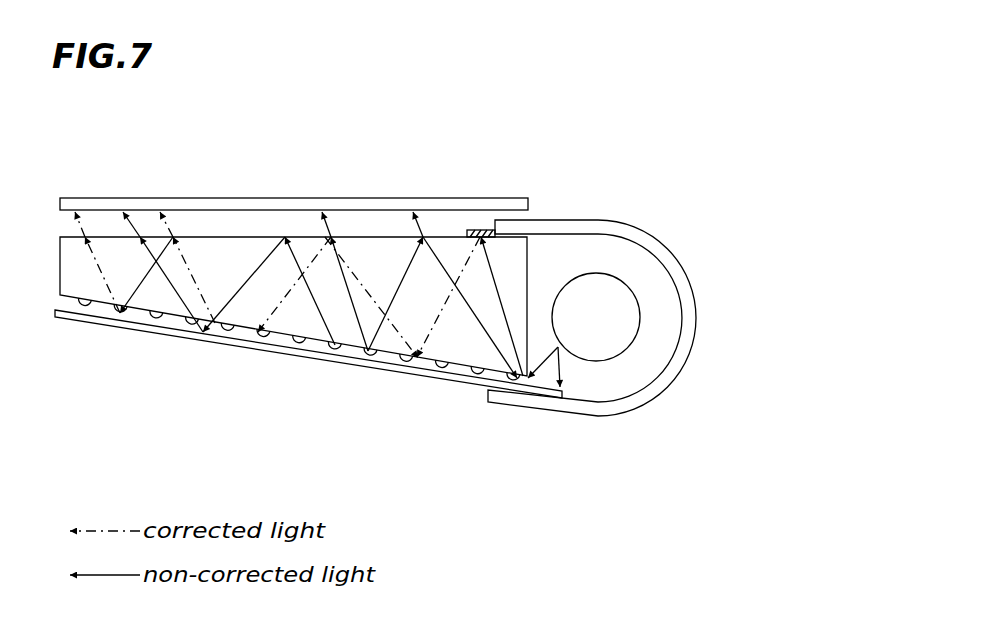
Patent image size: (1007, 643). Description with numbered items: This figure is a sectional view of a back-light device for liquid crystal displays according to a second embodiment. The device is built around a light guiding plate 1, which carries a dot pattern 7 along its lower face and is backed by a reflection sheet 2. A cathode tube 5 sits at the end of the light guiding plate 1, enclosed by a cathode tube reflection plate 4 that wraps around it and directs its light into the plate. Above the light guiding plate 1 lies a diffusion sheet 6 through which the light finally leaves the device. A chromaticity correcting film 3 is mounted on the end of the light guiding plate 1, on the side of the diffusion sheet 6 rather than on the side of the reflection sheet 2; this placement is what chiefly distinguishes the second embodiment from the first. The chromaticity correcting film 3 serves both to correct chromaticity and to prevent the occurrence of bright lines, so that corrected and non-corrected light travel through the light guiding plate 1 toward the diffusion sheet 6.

The light guiding plate 1 is at (288, 318).
The reflection sheet 2 is at (463, 382).
The chromaticity correcting film 3 is at (482, 237).
The cathode tube reflection plate 4 is at (632, 403).
The cathode tube 5 is at (617, 310).
The diffusion sheet 6 is at (168, 197).
The dot pattern 7 is at (85, 306).